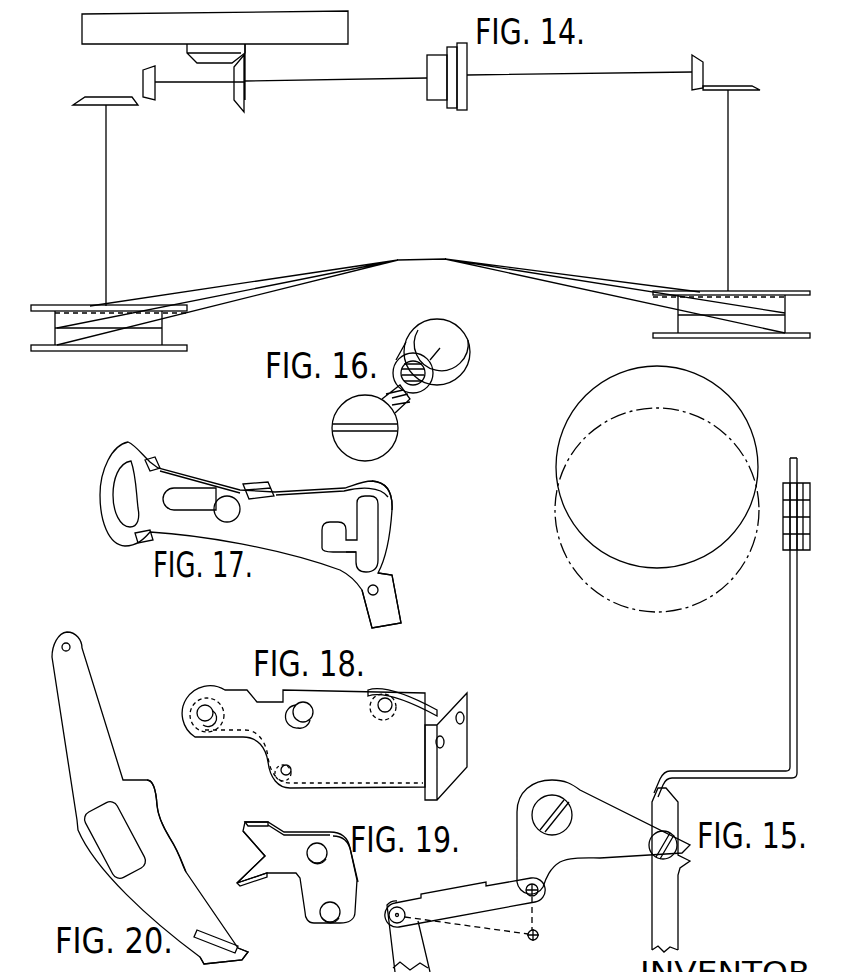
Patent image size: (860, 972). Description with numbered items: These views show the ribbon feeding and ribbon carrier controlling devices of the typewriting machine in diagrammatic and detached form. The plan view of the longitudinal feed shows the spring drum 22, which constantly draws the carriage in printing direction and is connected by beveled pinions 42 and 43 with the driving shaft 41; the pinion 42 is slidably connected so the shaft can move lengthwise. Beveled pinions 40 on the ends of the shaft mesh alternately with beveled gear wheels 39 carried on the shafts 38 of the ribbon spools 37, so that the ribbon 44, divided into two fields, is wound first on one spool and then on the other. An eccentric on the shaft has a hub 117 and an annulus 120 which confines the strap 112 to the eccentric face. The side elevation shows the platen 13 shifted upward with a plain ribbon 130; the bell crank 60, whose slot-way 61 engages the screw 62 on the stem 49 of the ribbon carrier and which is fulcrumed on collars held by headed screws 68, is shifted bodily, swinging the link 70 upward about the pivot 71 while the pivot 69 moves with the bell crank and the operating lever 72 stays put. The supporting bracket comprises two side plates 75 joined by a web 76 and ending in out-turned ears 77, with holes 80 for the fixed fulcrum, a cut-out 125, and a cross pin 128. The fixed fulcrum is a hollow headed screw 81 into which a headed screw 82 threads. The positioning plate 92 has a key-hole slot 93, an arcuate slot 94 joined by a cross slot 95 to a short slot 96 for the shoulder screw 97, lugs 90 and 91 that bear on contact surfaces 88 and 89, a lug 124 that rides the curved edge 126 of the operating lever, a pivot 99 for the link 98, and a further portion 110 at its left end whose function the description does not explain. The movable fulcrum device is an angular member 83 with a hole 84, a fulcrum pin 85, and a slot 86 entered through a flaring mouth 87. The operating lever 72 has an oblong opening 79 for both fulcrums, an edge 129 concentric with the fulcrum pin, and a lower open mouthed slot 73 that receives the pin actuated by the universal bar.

In FIG. 15, the cylindrical platen 13 is at (556, 505).
In FIG. 14, the spring drum 22 is at (315, 35).
In FIG. 14, the ribbon spools 37 is at (697, 338).
In FIG. 14, the shafts 38 is at (108, 200).
In FIG. 14, the beveled gear wheel 39 is at (97, 100).
In FIG. 14, the beveled pinions 40 is at (152, 98).
In FIG. 14, the driving shaft 41 is at (583, 75).
In FIG. 14, the beveled pinion 42 is at (246, 100).
In FIG. 14, the beveled pinion 43 is at (213, 58).
In FIG. 14, the ribbon 44 is at (562, 270).
In FIG. 15, the stem 49 is at (790, 733).
In FIG. 15, the bell crank lever 60 is at (517, 852).
In FIG. 15, the open mouthed slot-way 61 is at (688, 856).
In FIG. 15, the screw 62 is at (649, 846).
In FIG. 15, the headed screws 68 is at (572, 818).
In FIG. 15, the pivot 69 is at (545, 892).
In FIG. 19, the link 70 is at (449, 897).
In FIG. 19, the pivot 71 is at (397, 906).
In FIG. 20, the operating lever 72 is at (102, 727).
In FIG. 19, the operating lever 72 is at (393, 958).
In FIG. 20, the open mouthed slot 73 is at (233, 963).
In FIG. 18, the side plates 75 is at (426, 712).
In FIG. 18, the web 76 is at (362, 690).
In FIG. 18, the out-turned ears 77 is at (466, 700).
In FIG. 20, the oblong opening 79 is at (100, 806).
In FIG. 18, the holes 80 is at (215, 702).
In FIG. 16, the hollow headed screw 81 is at (452, 328).
In FIG. 16, the headed screw 82 is at (378, 443).
In FIG. 19, the angular member or lever 83 is at (306, 896).
In FIG. 19, the hole 84 is at (320, 843).
In FIG. 19, the fulcrum pin 85 is at (330, 922).
In FIG. 19, the slot 86 is at (279, 832).
In FIG. 19, the flaring mouth 87 is at (260, 855).
In FIG. 19, the contact surface 88 is at (255, 822).
In FIG. 19, the contact surface 89 is at (255, 881).
In FIG. 17, the lug 90 is at (152, 461).
In FIG. 17, the lug 91 is at (140, 542).
In FIG. 17, the positioning member or plate 92 is at (105, 482).
In FIG. 17, the key-hole slot 93 is at (203, 497).
In FIG. 17, the arcuate slot 94 is at (393, 508).
In FIG. 17, the cross slot 95 is at (335, 554).
In FIG. 17, the upwardly extending slot 96 is at (334, 522).
In FIG. 18, the headed shoulder screw 97 is at (390, 700).
In FIG. 17, the link 98 is at (394, 606).
In FIG. 17, the pivotal connection 99 is at (369, 595).
In FIG. 17, the loop 110 is at (110, 510).
In FIG. 14, the strap 112 is at (456, 45).
In FIG. 14, the hub 117 is at (436, 97).
In FIG. 14, the annulus 120 is at (467, 66).
In FIG. 17, the lug 124 is at (258, 486).
In FIG. 18, the cut-out 125 is at (268, 700).
In FIG. 20, the curved edge 126 is at (160, 795).
In FIG. 18, the cross pin 128 is at (275, 775).
In FIG. 20, the edge 129 is at (181, 849).
In FIG. 15, the plain ribbon 130 is at (796, 462).